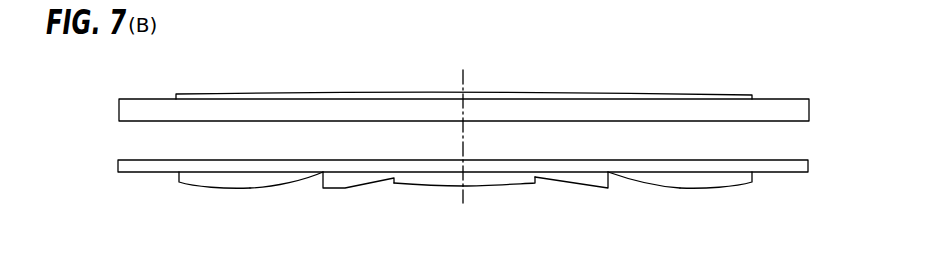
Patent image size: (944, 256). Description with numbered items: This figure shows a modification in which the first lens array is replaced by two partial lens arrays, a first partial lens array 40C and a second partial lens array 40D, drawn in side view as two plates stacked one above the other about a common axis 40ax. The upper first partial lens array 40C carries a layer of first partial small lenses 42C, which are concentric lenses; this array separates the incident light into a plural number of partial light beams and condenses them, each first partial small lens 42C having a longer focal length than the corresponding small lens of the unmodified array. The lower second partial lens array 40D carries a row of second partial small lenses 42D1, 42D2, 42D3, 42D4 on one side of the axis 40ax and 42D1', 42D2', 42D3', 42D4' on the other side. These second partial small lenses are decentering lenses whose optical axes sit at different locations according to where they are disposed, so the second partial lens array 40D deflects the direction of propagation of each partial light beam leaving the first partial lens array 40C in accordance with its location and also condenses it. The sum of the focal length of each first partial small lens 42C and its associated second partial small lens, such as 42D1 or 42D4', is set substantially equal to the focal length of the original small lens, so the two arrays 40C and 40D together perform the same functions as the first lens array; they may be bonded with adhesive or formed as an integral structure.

The first partial lens array 40C is at (828, 92).
The first partial small lens 42C is at (643, 93).
The optical axis 40ax is at (464, 75).
The second partial lens array 40D is at (818, 164).
The second partial small lens 42D4' is at (201, 207).
The second partial small lens 42D3' is at (276, 207).
The second partial small lens 42D2' is at (351, 207).
The second partial small lens 42D1' is at (423, 212).
The second partial small lens 42D1 is at (502, 210).
The second partial small lens 42D2 is at (577, 207).
The second partial small lens 42D3 is at (652, 207).
The second partial small lens 42D4 is at (727, 207).